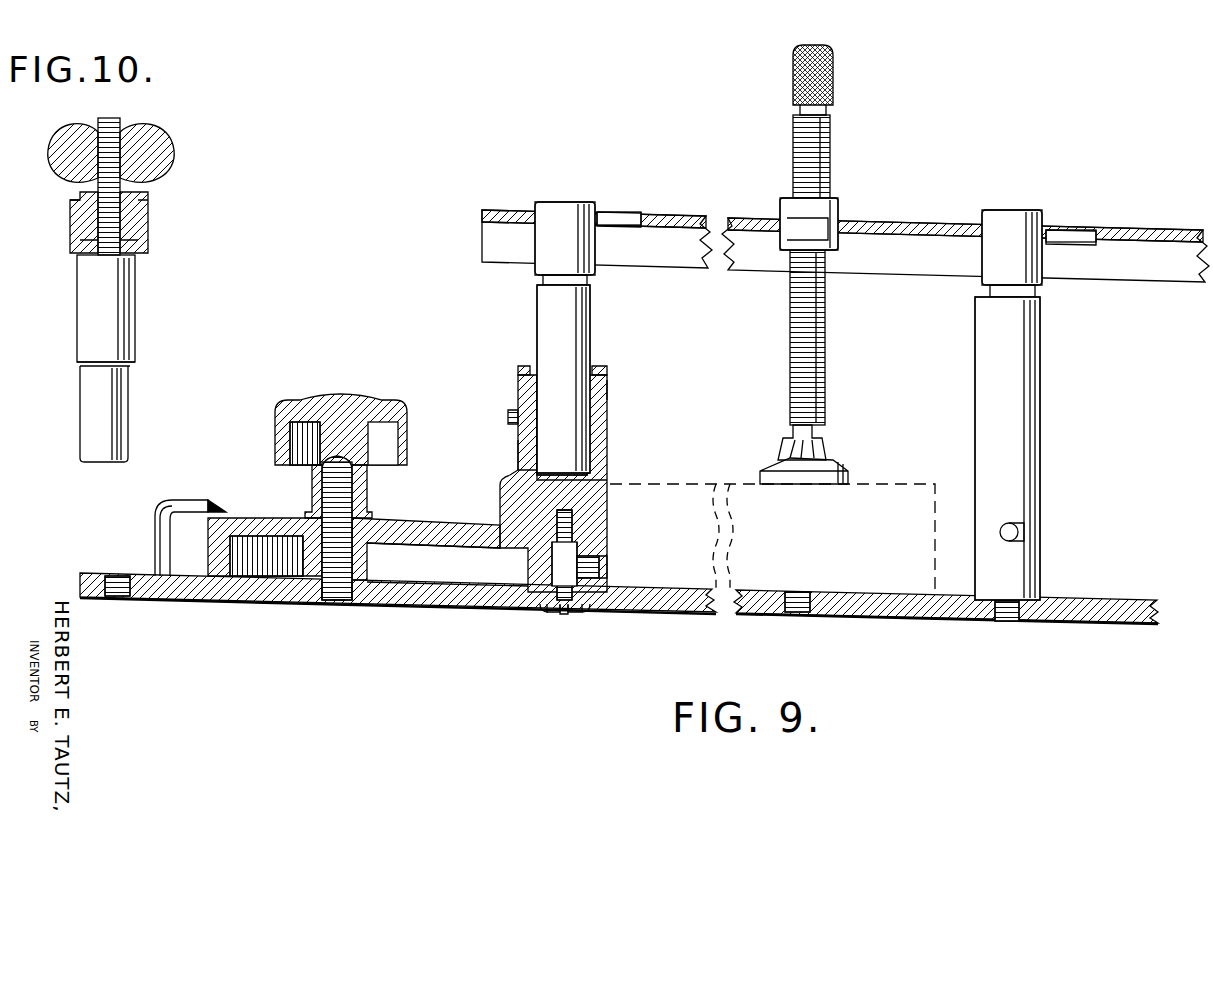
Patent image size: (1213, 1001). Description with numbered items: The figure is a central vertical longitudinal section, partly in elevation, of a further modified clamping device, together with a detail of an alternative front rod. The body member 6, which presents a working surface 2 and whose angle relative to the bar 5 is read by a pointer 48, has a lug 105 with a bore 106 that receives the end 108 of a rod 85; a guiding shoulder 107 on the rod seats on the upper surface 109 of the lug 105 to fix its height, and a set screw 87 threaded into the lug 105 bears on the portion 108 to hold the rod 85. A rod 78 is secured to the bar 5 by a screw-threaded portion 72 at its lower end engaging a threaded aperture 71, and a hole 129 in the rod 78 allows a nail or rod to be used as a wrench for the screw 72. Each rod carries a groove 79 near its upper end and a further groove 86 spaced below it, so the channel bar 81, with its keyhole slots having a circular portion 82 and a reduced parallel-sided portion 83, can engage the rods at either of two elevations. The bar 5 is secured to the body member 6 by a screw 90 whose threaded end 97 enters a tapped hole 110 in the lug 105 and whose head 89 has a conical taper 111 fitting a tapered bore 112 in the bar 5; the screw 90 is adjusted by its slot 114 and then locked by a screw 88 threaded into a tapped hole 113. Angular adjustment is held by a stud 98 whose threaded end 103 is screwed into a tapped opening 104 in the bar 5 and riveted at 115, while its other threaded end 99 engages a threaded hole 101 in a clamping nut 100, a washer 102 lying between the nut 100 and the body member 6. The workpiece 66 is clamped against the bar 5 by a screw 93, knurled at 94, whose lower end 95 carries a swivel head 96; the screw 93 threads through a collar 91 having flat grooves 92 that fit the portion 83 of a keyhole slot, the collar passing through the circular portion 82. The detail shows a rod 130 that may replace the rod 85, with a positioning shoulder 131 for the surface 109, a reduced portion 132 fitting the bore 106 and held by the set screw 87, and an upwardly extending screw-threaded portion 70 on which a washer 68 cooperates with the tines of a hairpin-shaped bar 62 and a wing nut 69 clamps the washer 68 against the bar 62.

In FIG. 9, the surface 2 is at (610, 458).
In FIG. 9, the bar 5 is at (934, 620).
In FIG. 9, the body member 6 is at (476, 540).
In FIG. 9, the pointer 48 is at (184, 500).
In FIG. 10, the hairpin-shaped bar 62 is at (86, 243).
In FIG. 9, the workpiece 66 is at (920, 500).
In FIG. 10, the washer 68 is at (148, 210).
In FIG. 10, the wing nut 69 is at (160, 156).
In FIG. 10, the screw-threaded portion 70 is at (110, 130).
In FIG. 9, the threaded aperture 71 is at (118, 584).
In FIG. 9, the screw-threaded portion 72 is at (1006, 624).
In FIG. 9, the rod 78 is at (1022, 362).
In FIG. 9, the groove 79 is at (566, 205).
In FIG. 9, the channel bar 81 is at (940, 228).
In FIG. 9, the circular portion of keyhole slot 82 is at (642, 222).
In FIG. 9, the reduced parallel-sided portion of keyhole slot 83 is at (598, 222).
In FIG. 9, the rod 85 is at (580, 322).
In FIG. 9, the groove 86 is at (590, 282).
In FIG. 9, the set screw 87 is at (510, 414).
In FIG. 9, the screw 88 is at (604, 566).
In FIG. 9, the head 89 is at (556, 614).
In FIG. 9, the screw 90 is at (556, 568).
In FIG. 9, the collar 91 is at (838, 218).
In FIG. 9, the flat groove 92 is at (818, 232).
In FIG. 9, the screw 93 is at (830, 156).
In FIG. 9, the knurled portion 94 is at (832, 82).
In FIG. 9, the lower end 95 is at (815, 435).
In FIG. 9, the swivel head 96 is at (832, 466).
In FIG. 9, the threaded end 97 is at (575, 528).
In FIG. 9, the stud 98 is at (338, 566).
In FIG. 9, the threaded end 99 is at (354, 492).
In FIG. 9, the clamping nut 100 is at (330, 418).
In FIG. 9, the threaded hole 101 is at (322, 478).
In FIG. 9, the washer 102 is at (370, 524).
In FIG. 9, the threaded end 103 is at (338, 602).
In FIG. 9, the tapped opening 104 is at (318, 600).
In FIG. 9, the lug 105 is at (518, 464).
In FIG. 9, the bore 106 is at (609, 402).
In FIG. 9, the guiding shoulder 107 is at (596, 375).
In FIG. 9, the end of rod 108 is at (575, 432).
In FIG. 9, the upper surface 109 is at (530, 372).
In FIG. 9, the tapped hole 110 is at (574, 514).
In FIG. 9, the conical taper 111 is at (586, 612).
In FIG. 9, the tapered bore 112 is at (546, 610).
In FIG. 9, the tapped hole 113 is at (606, 560).
In FIG. 9, the slot 114 is at (566, 614).
In FIG. 9, the riveted portion 115 is at (350, 602).
In FIG. 9, the hole 129 is at (1026, 532).
In FIG. 10, the rod 130 is at (122, 316).
In FIG. 10, the positioning shoulder 131 is at (134, 364).
In FIG. 10, the reduced portion 132 is at (118, 416).